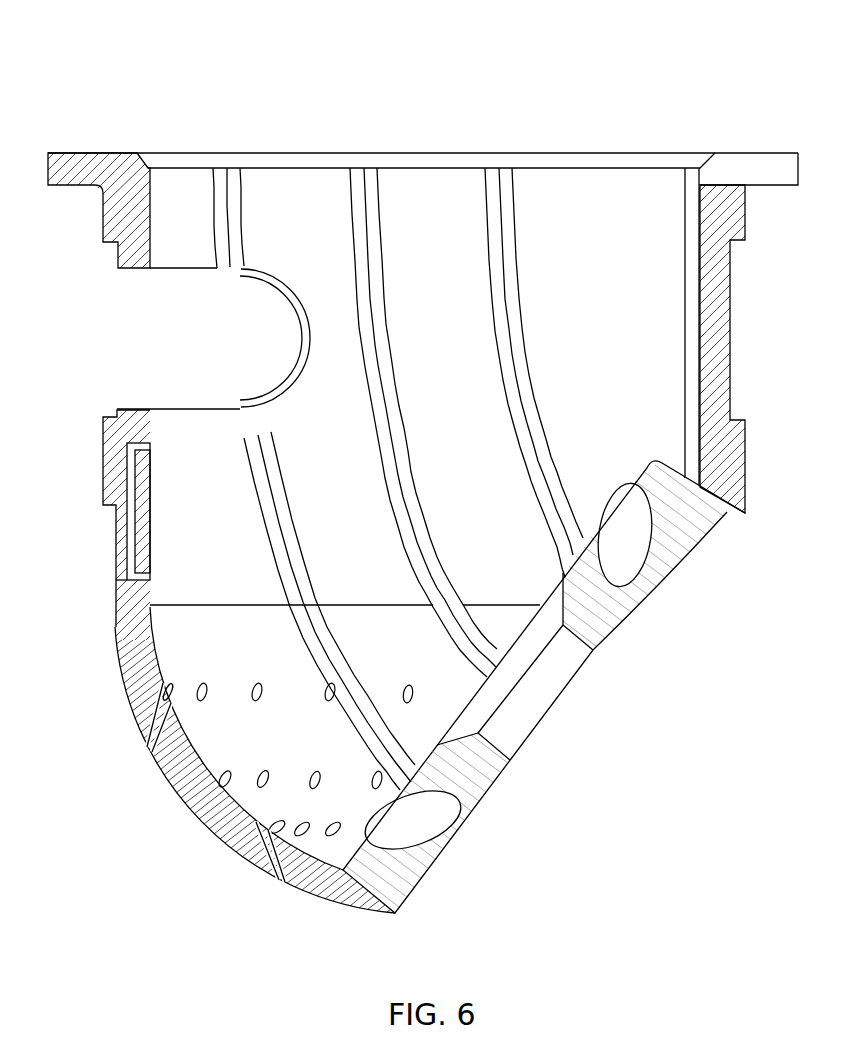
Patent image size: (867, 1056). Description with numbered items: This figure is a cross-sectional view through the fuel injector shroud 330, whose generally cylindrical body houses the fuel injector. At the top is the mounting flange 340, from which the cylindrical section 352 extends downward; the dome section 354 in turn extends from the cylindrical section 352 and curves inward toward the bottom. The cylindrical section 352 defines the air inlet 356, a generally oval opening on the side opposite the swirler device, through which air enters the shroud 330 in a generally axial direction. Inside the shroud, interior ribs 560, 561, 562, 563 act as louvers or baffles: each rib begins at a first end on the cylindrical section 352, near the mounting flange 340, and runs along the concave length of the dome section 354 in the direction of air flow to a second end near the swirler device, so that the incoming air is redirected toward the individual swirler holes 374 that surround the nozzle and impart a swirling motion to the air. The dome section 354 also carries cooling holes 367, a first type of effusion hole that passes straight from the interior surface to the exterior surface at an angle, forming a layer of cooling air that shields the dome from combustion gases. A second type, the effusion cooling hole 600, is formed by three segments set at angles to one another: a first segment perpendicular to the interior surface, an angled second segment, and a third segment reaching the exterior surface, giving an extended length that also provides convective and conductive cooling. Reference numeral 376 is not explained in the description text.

The fuel injector shroud 330 is at (755, 97).
The mounting flange 340 is at (776, 185).
The cylindrical section 352 is at (737, 236).
The dome section 354 is at (197, 803).
The air inlet 356 is at (135, 328).
The cooling holes 367 is at (150, 728).
The swirler holes 374 is at (436, 836).
The nozzle 376 is at (683, 555).
The interior rib 560 is at (218, 234).
The interior rib 561 is at (355, 236).
The interior rib 562 is at (490, 241).
The interior rib 563 is at (688, 251).
The effusion cooling hole 600 is at (128, 543).